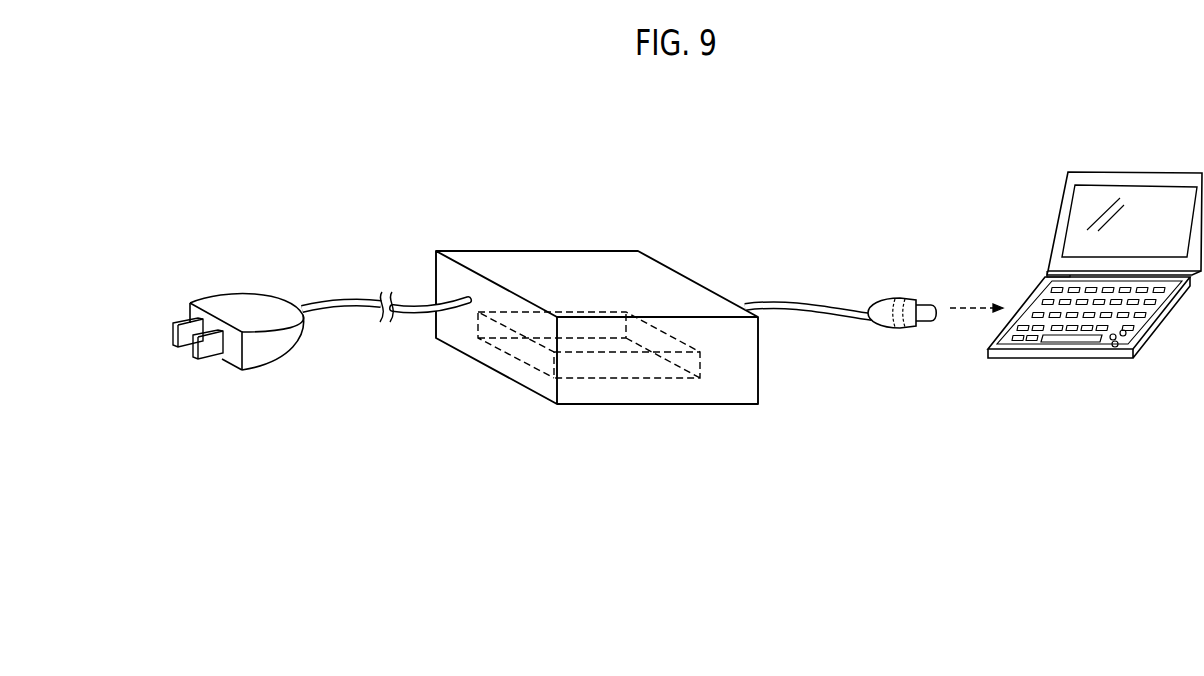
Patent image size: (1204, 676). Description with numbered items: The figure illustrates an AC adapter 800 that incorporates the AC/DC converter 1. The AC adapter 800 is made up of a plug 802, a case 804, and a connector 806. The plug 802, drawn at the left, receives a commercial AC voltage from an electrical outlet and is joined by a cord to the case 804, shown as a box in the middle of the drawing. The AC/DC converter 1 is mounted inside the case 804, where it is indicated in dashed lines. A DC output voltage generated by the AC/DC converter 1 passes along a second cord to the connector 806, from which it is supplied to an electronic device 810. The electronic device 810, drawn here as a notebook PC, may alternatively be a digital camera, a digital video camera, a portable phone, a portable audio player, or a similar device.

The AC adapter 800 is at (706, 576).
The plug 802 is at (245, 308).
The case 804 is at (527, 250).
The AC/DC converter 1 is at (617, 365).
The connector 806 is at (888, 298).
The electronic device 810 is at (1150, 172).